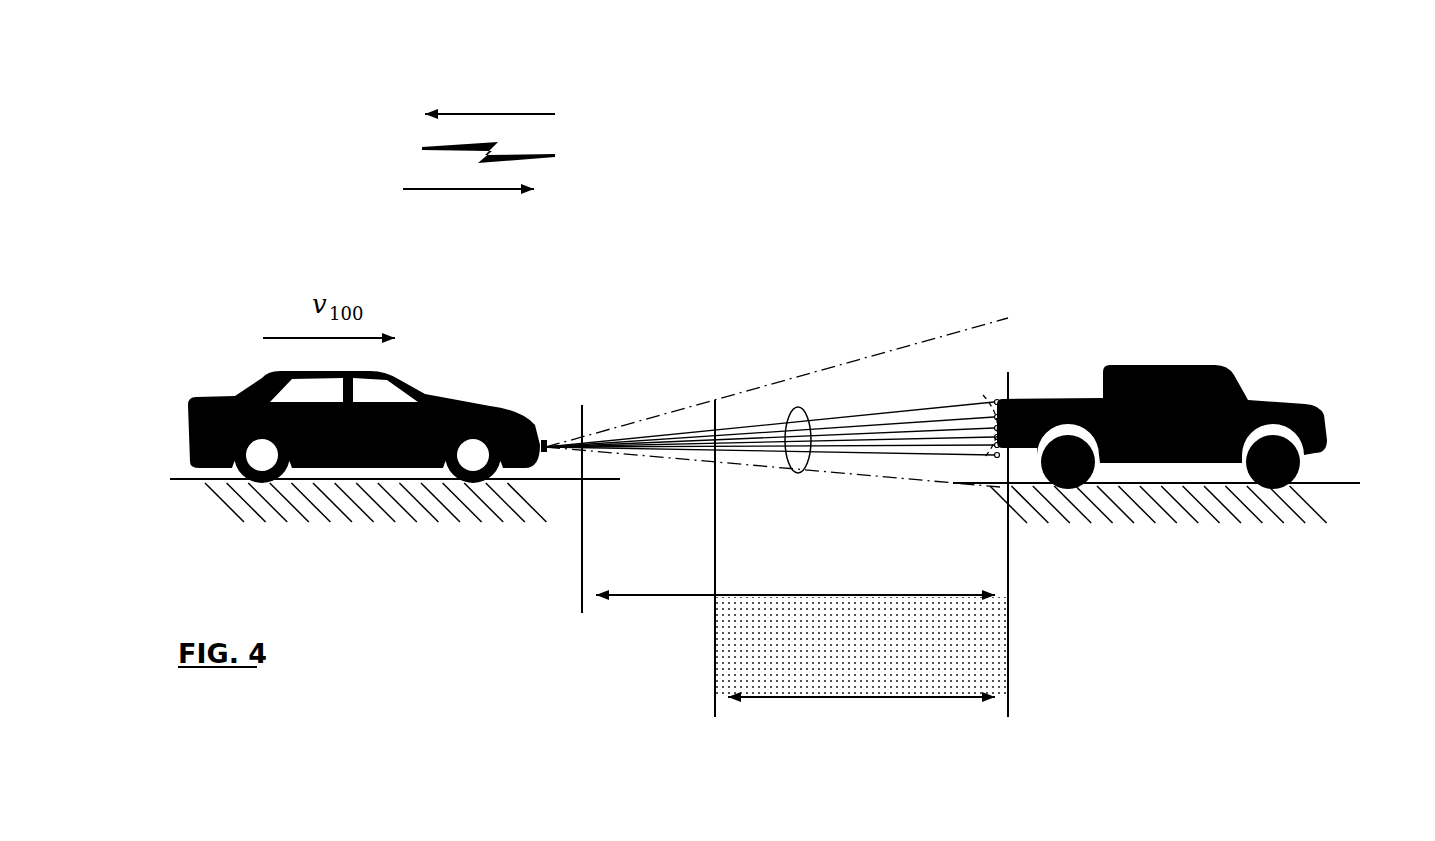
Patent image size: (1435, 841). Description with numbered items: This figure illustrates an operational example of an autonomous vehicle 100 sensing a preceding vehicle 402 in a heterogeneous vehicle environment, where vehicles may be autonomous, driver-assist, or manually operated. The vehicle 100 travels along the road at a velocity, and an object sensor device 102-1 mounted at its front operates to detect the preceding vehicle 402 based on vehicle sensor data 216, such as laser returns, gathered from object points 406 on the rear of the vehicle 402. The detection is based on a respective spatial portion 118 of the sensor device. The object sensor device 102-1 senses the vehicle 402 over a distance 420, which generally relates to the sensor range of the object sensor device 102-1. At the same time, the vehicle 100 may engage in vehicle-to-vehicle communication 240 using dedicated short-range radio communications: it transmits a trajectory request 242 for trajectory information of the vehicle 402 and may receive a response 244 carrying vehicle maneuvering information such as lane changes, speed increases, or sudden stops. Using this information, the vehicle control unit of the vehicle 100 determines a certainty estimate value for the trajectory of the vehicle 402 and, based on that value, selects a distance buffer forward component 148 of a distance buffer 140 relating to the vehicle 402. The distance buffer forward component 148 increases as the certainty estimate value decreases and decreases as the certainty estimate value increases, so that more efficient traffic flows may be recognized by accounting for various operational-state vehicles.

The autonomous vehicle 100 is at (190, 348).
The object sensor device 102-1 is at (560, 430).
The spatial portion 118 is at (846, 397).
The distance buffer 140 is at (926, 665).
The distance buffer forward component 148 is at (802, 697).
The vehicle sensor data 216 is at (770, 465).
The vehicle-to-vehicle communication 240 is at (543, 156).
The trajectory request 242 is at (433, 190).
The response 244 is at (485, 113).
The preceding vehicle 402 is at (1086, 348).
The object points 406 is at (972, 394).
The distance 420 is at (640, 595).